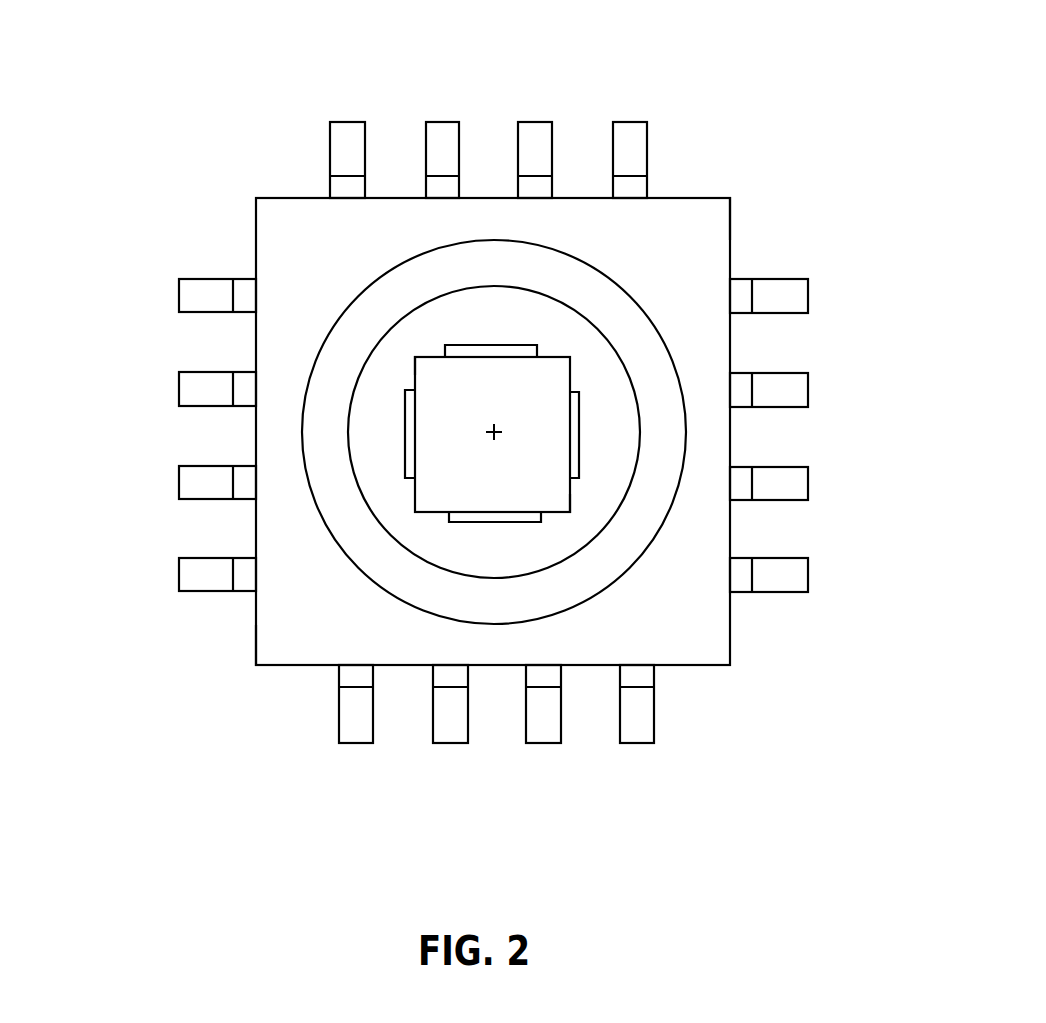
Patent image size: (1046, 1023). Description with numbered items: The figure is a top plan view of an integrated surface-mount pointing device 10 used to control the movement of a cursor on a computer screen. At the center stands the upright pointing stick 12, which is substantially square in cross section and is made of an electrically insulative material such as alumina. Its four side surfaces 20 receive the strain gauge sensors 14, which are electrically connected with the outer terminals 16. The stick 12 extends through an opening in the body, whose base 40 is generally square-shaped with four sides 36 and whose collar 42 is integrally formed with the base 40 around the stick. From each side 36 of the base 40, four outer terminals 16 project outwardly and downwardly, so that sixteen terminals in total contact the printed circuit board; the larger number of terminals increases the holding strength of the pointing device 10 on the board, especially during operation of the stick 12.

The integrated surface-mount pointing device 10 is at (760, 118).
The pointing stick 12 is at (405, 518).
The strain gauge sensors 14 is at (396, 397).
The outer terminals 16 is at (632, 133).
The side surfaces 20 is at (404, 391).
The sides 36 is at (731, 228).
The base 40 is at (283, 223).
The collar 42 is at (330, 412).